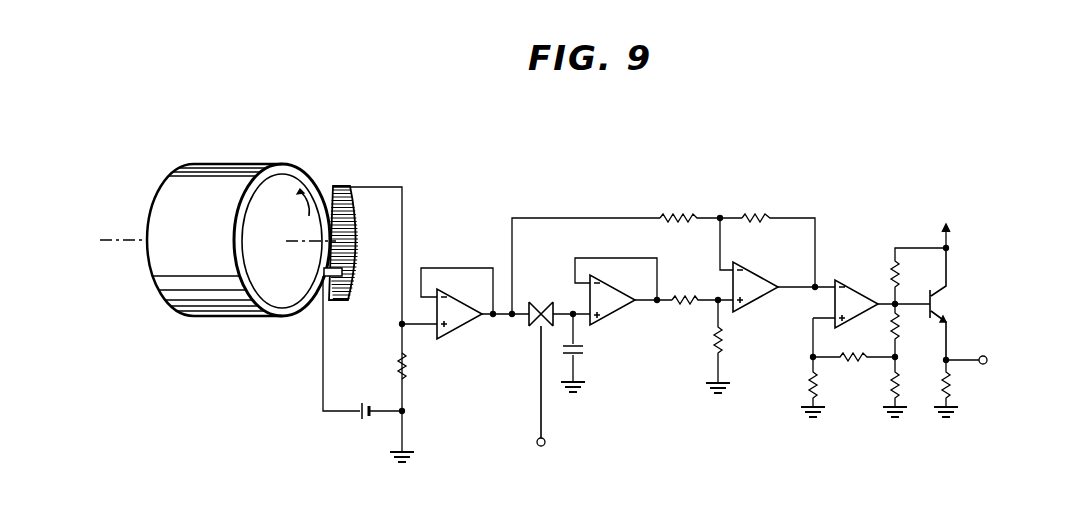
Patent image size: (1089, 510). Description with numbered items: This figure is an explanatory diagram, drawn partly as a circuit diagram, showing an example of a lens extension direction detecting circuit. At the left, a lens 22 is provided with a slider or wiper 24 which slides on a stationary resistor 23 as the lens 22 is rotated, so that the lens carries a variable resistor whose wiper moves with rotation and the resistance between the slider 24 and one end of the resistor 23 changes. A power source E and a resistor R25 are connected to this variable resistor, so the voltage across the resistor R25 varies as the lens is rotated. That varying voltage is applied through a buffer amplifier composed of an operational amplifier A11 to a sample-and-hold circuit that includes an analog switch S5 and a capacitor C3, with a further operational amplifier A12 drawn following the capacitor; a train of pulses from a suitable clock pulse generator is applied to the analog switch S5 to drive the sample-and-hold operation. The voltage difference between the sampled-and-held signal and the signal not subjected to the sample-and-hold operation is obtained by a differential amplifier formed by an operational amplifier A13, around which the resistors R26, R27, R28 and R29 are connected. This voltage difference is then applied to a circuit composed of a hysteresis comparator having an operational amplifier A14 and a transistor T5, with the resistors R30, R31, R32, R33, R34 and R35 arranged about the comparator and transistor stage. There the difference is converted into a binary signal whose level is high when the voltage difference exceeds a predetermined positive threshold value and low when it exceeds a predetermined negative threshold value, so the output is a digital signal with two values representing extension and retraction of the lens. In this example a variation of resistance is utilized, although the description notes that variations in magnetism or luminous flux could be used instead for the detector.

The lens 22 is at (219, 181).
The stationary resistor 23 is at (340, 187).
The slider or wiper 24 is at (350, 270).
The resistor R25 is at (418, 369).
The power source E is at (363, 420).
The operational amplifier A11 is at (463, 313).
The analog switch S5 is at (537, 386).
The capacitor C3 is at (582, 353).
The operational amplifier A12 is at (620, 305).
The resistor R26 is at (700, 208).
The resistor R27 is at (701, 292).
The resistor R28 is at (778, 240).
The resistor R29 is at (730, 346).
The operational amplifier A13 is at (762, 292).
The operational amplifier A14 is at (858, 308).
The resistor R30 is at (824, 387).
The resistor R31 is at (855, 371).
The resistor R32 is at (924, 253).
The resistor R33 is at (911, 330).
The resistor R34 is at (907, 387).
The resistor R35 is at (958, 388).
The transistor T5 is at (981, 309).